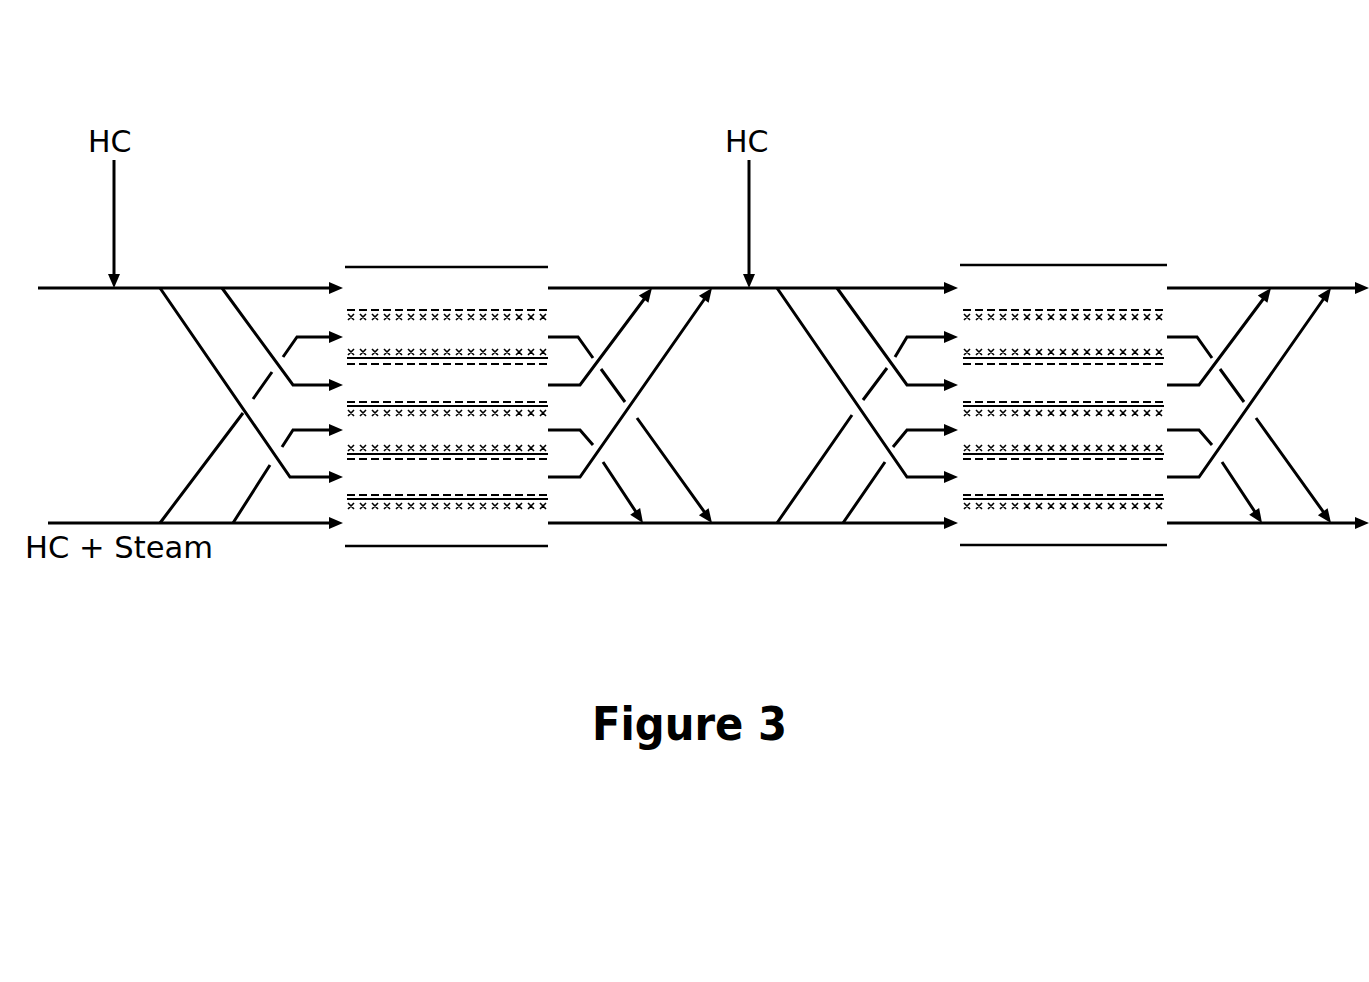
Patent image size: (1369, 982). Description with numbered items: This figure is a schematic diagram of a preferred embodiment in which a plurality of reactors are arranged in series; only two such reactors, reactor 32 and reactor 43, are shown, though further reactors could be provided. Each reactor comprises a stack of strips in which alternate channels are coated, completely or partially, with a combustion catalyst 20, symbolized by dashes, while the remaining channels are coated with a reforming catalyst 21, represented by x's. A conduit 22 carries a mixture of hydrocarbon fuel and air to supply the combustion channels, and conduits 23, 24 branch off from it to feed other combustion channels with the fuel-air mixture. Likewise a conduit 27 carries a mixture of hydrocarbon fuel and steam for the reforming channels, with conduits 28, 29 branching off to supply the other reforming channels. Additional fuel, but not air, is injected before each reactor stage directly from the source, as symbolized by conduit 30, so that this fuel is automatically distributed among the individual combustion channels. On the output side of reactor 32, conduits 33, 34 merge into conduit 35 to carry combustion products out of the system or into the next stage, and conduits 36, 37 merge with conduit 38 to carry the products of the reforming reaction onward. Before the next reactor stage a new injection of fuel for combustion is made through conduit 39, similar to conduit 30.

The combustion catalyst 20 is at (378, 310).
The reforming catalyst 21 is at (400, 508).
The conduit 22 is at (287, 285).
The conduit 23 is at (197, 340).
The conduit 24 is at (233, 300).
The conduit 27 is at (268, 527).
The conduit 28 is at (193, 473).
The conduit 29 is at (240, 503).
The conduit 30 is at (115, 190).
The reactor 32 is at (366, 266).
The conduit 33 is at (672, 357).
The conduit 34 is at (637, 317).
The conduit 35 is at (806, 288).
The conduit 36 is at (672, 455).
The conduit 37 is at (627, 489).
The conduit 38 is at (685, 525).
The conduit 39 is at (750, 198).
The reactor 43 is at (1037, 265).